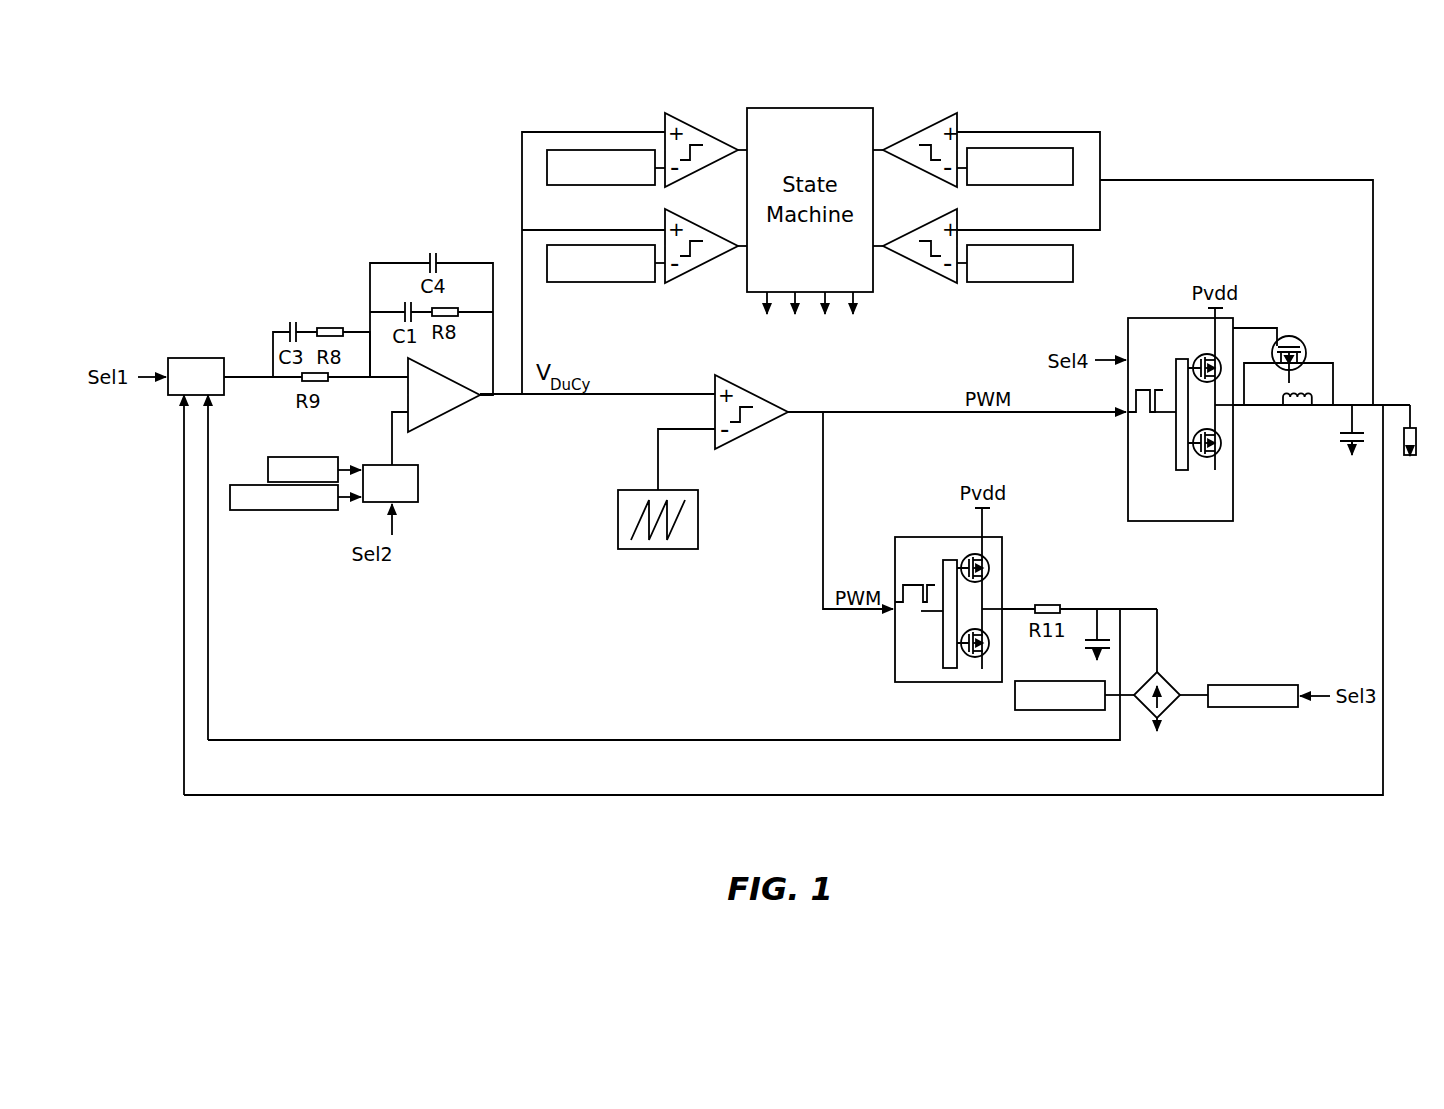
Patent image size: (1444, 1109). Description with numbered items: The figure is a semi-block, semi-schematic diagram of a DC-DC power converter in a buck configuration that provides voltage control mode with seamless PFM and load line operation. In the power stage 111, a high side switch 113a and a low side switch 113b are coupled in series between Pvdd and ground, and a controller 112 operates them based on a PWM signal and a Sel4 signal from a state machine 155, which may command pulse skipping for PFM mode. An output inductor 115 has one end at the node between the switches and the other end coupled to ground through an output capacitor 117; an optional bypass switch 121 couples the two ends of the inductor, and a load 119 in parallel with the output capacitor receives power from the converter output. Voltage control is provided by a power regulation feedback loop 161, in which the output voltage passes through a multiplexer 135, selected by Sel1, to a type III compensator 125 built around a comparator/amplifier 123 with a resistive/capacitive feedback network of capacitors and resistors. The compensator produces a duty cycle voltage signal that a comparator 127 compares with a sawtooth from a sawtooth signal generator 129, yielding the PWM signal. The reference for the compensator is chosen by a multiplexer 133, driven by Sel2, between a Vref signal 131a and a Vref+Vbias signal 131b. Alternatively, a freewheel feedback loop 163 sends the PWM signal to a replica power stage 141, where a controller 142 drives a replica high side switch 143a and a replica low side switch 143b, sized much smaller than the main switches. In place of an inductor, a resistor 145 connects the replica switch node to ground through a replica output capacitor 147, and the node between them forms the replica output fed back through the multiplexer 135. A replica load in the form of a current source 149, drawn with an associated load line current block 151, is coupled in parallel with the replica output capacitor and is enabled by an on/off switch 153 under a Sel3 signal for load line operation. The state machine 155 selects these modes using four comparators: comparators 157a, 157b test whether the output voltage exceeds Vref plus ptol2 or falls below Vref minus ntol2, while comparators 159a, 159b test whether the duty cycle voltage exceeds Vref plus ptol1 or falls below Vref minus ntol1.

The power stage 111 is at (1180, 521).
The controller 112 is at (1176, 440).
The high side switch 113a is at (1198, 356).
The low side switch 113b is at (1217, 448).
The output inductor 115 is at (1295, 399).
The output capacitor 117 is at (1345, 458).
The load 119 is at (1412, 428).
The bypass switch 121 is at (1287, 336).
The comparator/amplifier 123 is at (453, 409).
The type III compensator 125 is at (383, 178).
The comparator 127 is at (755, 431).
The sawtooth signal generator 129 is at (698, 520).
The Vref signal 131a is at (268, 470).
The Vref+Vbias signal 131b is at (230, 497).
The multiplexer 133 is at (418, 483).
The multiplexer 135 is at (197, 356).
The replica power stage 141 is at (918, 537).
The controller 142 is at (943, 640).
The replica high side switch 143a is at (985, 561).
The replica low side switch 143b is at (975, 658).
The resistor 145 is at (1050, 603).
The replica output capacitor 147 is at (1110, 624).
The current source 149 is at (1180, 715).
The load line current block 151 is at (1060, 710).
The on/off switch 153 is at (1273, 685).
The state machine 155 is at (812, 108).
The comparator 157a is at (920, 128).
The comparator 157b is at (918, 268).
The comparator 159a is at (700, 120).
The comparator 159b is at (700, 268).
The power regulation feedback loop 161 is at (365, 805).
The freewheel feedback loop 163 is at (636, 718).